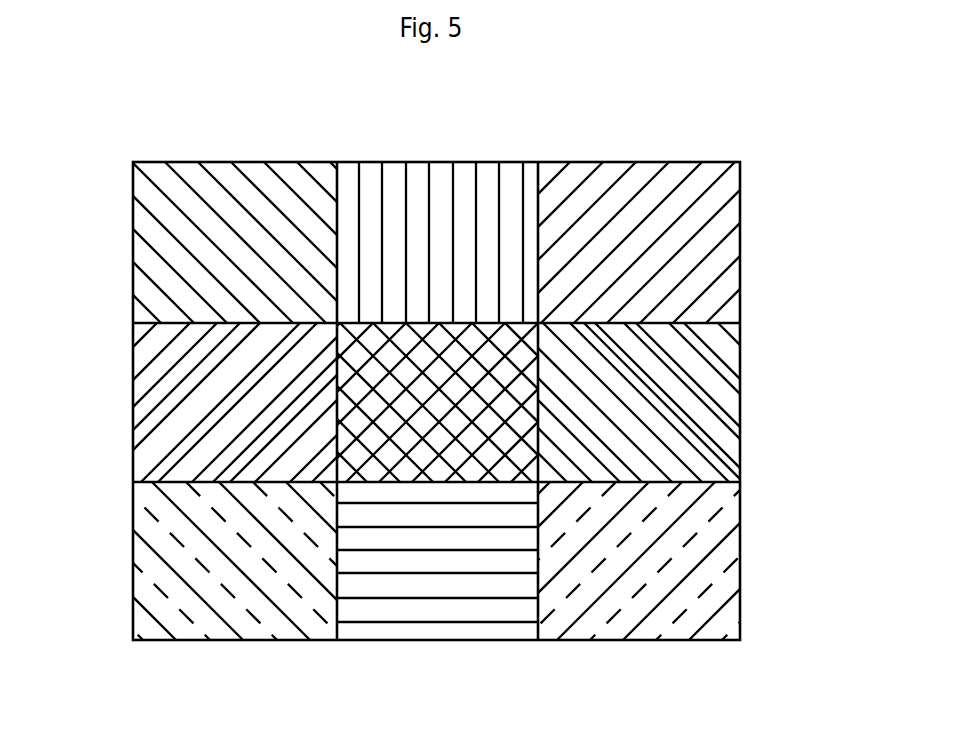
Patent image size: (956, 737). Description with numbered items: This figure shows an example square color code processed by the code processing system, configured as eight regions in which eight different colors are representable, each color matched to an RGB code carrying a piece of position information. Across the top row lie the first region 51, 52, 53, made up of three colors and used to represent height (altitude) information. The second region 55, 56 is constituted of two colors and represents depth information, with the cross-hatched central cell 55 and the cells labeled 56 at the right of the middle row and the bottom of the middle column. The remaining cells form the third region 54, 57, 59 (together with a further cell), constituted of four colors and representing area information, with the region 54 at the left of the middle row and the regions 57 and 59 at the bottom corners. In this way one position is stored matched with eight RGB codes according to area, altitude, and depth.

The first region 51 is at (234, 162).
The first region 52 is at (437, 162).
The first region 53 is at (638, 162).
The third region 54 is at (133, 401).
The second region 55 is at (463, 453).
The second region 56 is at (740, 401).
The third region 57 is at (235, 641).
The third region 59 is at (638, 641).